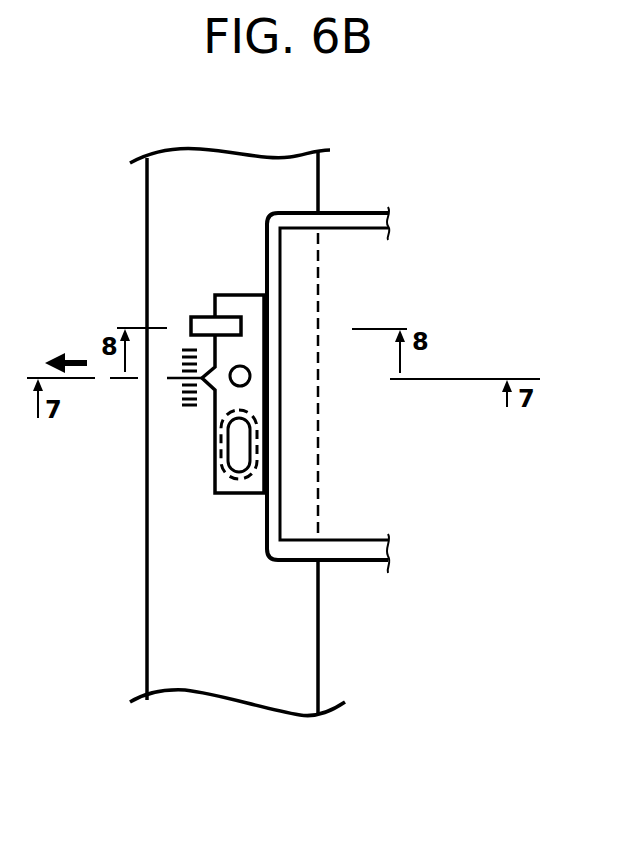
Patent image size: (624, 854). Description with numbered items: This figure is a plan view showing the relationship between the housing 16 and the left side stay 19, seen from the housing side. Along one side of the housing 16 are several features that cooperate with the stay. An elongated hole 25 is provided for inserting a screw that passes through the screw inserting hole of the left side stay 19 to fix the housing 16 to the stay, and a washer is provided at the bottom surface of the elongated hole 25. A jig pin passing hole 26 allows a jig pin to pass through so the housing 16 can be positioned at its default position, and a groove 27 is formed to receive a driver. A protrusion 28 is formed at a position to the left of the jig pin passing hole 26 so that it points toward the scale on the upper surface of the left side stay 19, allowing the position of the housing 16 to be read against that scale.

The housing 16 is at (380, 212).
The left side stay 19 is at (291, 648).
The elongated hole 25 is at (222, 468).
The jig pin passing hole 26 is at (251, 376).
The groove 27 is at (233, 317).
The protrusion 28 is at (213, 390).